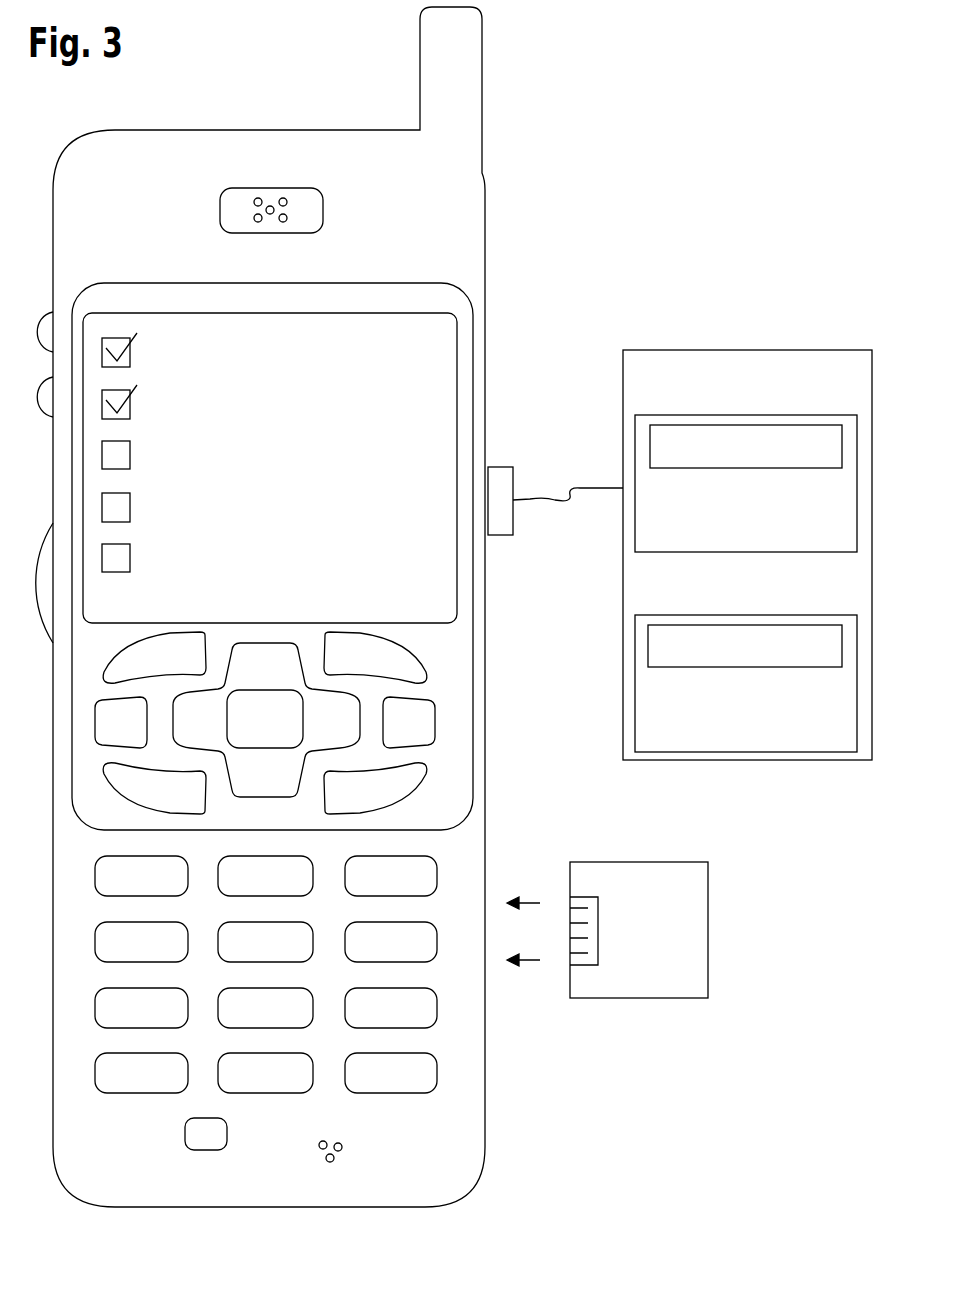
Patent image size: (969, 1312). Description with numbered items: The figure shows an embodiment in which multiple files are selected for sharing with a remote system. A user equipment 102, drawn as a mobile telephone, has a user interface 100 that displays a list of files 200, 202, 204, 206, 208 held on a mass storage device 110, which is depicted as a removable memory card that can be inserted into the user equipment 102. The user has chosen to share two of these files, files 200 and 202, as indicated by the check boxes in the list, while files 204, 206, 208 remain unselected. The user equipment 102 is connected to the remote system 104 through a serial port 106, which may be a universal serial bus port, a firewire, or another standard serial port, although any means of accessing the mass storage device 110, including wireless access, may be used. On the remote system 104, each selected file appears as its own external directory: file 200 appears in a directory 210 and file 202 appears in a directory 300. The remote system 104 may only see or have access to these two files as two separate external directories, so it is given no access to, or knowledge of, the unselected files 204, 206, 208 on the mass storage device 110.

The user interface 100 is at (440, 622).
The user equipment 102 is at (108, 1205).
The remote system 104 is at (747, 510).
The serial port 106 is at (505, 467).
The mass storage device 110 is at (708, 932).
The file 200 is at (233, 351).
The file 202 is at (233, 405).
The file 204 is at (233, 455).
The file 206 is at (233, 510).
The file 208 is at (233, 562).
The directory 210 is at (738, 416).
The directory 300 is at (738, 616).